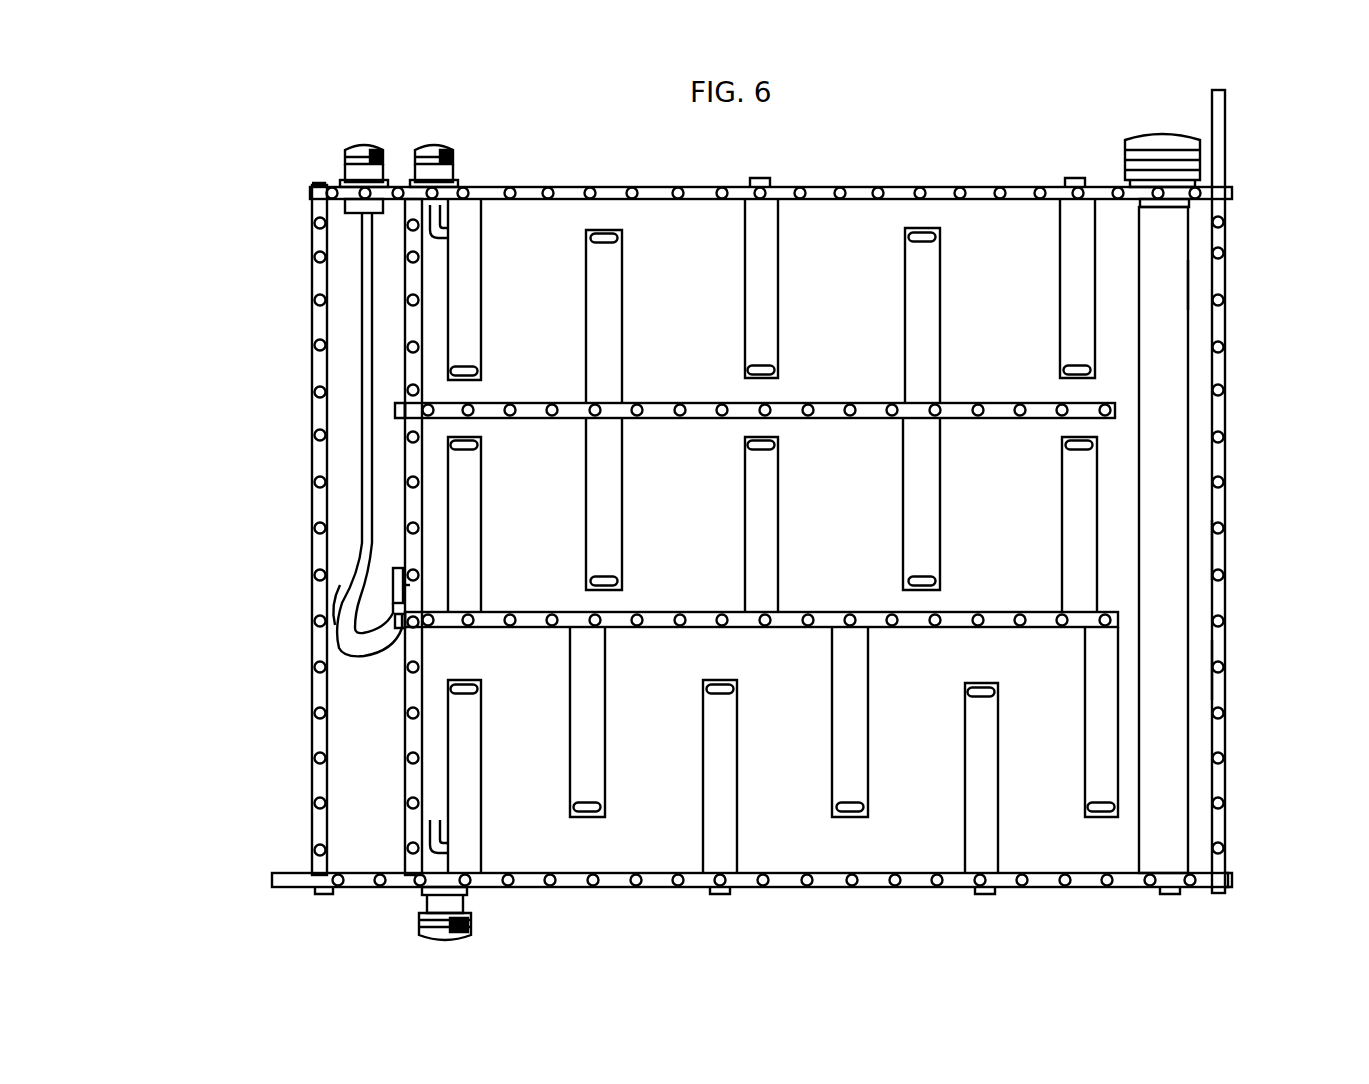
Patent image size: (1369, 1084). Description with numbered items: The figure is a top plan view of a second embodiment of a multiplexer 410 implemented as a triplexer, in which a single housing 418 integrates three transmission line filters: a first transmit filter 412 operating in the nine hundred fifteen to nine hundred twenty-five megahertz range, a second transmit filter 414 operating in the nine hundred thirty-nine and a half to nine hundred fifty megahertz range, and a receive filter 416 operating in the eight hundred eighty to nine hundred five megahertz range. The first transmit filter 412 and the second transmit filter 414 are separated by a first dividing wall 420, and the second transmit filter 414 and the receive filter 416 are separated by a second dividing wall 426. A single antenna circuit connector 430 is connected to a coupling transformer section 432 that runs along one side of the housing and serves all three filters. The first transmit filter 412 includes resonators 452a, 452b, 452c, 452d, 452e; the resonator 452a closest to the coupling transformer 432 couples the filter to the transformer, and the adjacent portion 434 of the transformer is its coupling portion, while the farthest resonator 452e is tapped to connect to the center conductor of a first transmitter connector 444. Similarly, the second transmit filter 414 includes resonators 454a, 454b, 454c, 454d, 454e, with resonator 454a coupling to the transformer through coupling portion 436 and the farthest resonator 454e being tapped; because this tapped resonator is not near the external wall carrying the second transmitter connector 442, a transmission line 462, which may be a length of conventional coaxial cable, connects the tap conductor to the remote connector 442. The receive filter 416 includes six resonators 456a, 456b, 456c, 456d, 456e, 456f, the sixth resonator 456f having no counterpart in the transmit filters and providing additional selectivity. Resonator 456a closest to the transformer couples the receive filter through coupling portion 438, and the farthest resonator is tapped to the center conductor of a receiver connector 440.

The multiplexer 410 is at (260, 242).
The first transmit filter 412 is at (1023, 261).
The second transmit filter 414 is at (1023, 509).
The receive filter 416 is at (1068, 672).
The housing 418 is at (1236, 212).
The first dividing wall 420 is at (877, 403).
The second dividing wall 426 is at (875, 610).
The antenna circuit connector 430 is at (1160, 132).
The coupling transformer section 432 is at (1193, 285).
The coupling portion for the first transmit filter 434 is at (1188, 345).
The coupling portion for the second transmit filter 436 is at (1190, 545).
The coupling portion for the receive filter 438 is at (1190, 665).
The receiver connector 440 is at (460, 935).
The second transmitter connector 442 is at (345, 148).
The first transmitter connector 444 is at (438, 147).
The resonator 452a is at (1063, 338).
The resonator 452b is at (910, 289).
The resonator 452c is at (778, 238).
The resonator 452d is at (622, 350).
The resonator 452e is at (482, 344).
The resonator 454a is at (1062, 569).
The resonator 454b is at (937, 560).
The resonator 454c is at (778, 468).
The resonator 454d is at (622, 516).
The resonator 454e is at (480, 510).
The resonator 456a is at (1085, 788).
The resonator 456b is at (998, 729).
The resonator 456c is at (865, 760).
The resonator 456d is at (737, 747).
The resonator 456e is at (605, 748).
The sixth resonator 456f is at (480, 700).
The transmission line 462 is at (360, 468).